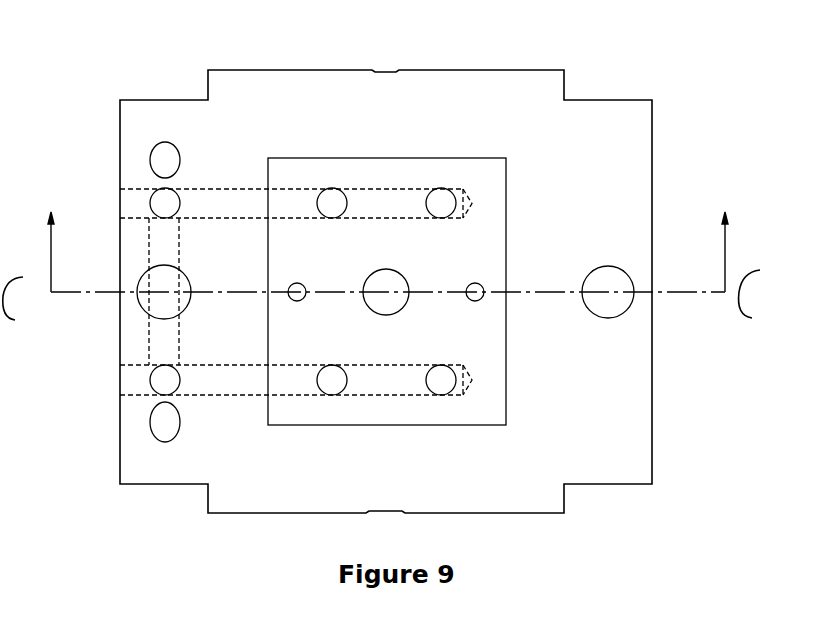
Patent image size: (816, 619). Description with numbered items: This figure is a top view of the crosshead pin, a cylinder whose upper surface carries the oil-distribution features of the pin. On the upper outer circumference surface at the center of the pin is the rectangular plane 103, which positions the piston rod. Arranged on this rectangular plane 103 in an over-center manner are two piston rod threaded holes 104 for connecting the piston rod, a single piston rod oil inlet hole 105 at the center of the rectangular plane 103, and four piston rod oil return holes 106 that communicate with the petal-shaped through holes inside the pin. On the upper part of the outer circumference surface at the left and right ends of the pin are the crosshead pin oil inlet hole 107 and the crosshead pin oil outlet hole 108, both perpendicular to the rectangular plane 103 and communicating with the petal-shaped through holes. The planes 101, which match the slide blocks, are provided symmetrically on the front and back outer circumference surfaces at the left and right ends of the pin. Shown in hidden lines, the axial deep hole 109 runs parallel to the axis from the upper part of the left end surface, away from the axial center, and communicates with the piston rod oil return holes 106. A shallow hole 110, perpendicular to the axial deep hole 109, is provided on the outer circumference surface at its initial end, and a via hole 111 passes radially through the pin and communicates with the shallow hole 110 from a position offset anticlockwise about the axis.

The plane 101 is at (636, 91).
The rectangular plane 103 is at (336, 255).
The piston rod threaded hole 104 is at (481, 276).
The piston rod oil inlet hole 105 is at (391, 267).
The piston rod oil return hole 106 is at (443, 196).
The crosshead pin oil inlet hole 107 is at (606, 277).
The crosshead pin oil outlet hole 108 is at (161, 275).
The axial deep hole 109 is at (253, 194).
The shallow hole 110 is at (181, 197).
The via hole 111 is at (160, 152).